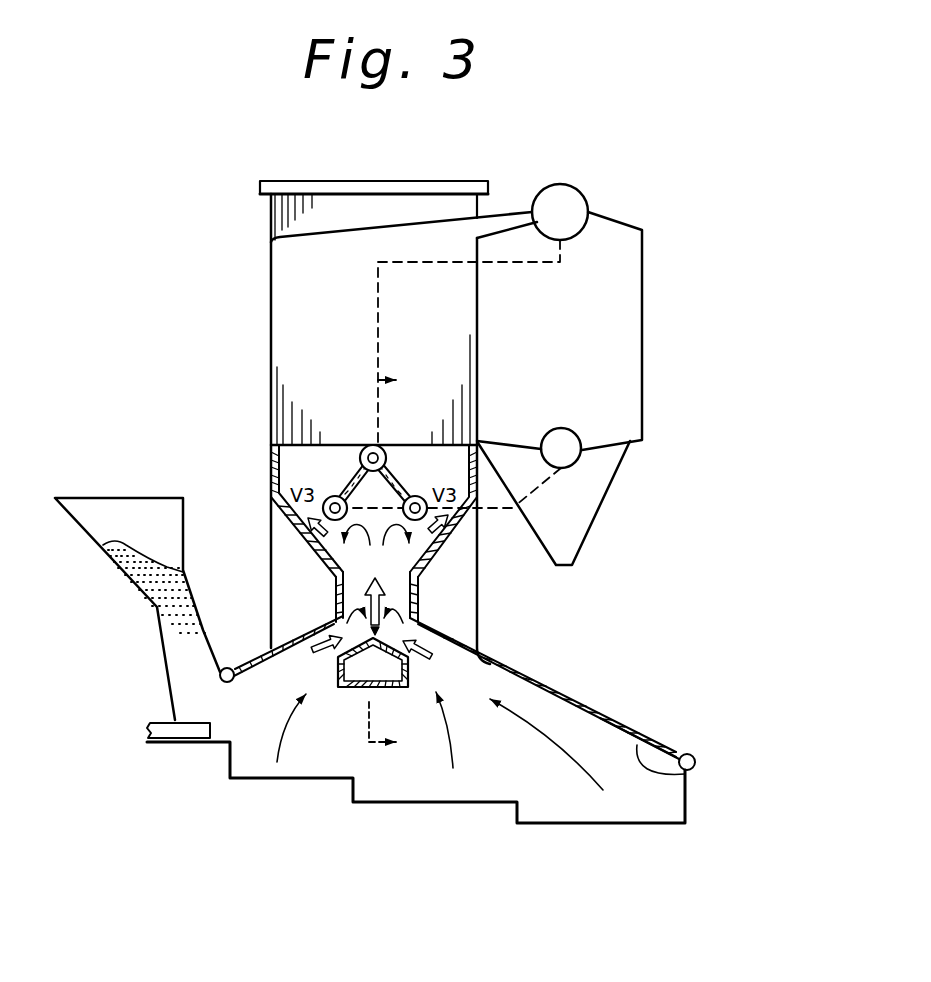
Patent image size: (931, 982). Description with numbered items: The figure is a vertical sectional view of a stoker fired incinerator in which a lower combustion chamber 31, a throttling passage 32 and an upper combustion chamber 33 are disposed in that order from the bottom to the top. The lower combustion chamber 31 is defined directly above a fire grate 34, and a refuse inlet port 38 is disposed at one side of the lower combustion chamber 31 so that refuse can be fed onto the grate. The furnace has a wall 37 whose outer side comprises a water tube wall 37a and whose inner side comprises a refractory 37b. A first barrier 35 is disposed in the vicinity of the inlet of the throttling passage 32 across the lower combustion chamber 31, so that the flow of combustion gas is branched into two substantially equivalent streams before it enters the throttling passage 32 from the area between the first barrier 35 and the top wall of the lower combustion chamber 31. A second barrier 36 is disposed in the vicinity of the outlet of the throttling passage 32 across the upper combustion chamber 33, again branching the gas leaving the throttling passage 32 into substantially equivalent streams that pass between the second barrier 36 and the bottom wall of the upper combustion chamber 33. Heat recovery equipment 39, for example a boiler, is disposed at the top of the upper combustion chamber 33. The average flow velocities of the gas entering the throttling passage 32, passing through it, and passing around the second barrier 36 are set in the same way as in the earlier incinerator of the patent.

The heat recovery equipment 39 is at (384, 243).
The second barrier 36 is at (357, 478).
The refuse inlet port 38 is at (130, 498).
The upper combustion chamber 33 is at (445, 464).
The throttling passage 32 is at (408, 613).
The first barrier 35 is at (410, 681).
The lower combustion chamber 31 is at (470, 702).
The wall 37 is at (602, 716).
The water tube wall 37a is at (648, 737).
The refractory 37b is at (696, 768).
The fire grate 34 is at (330, 780).